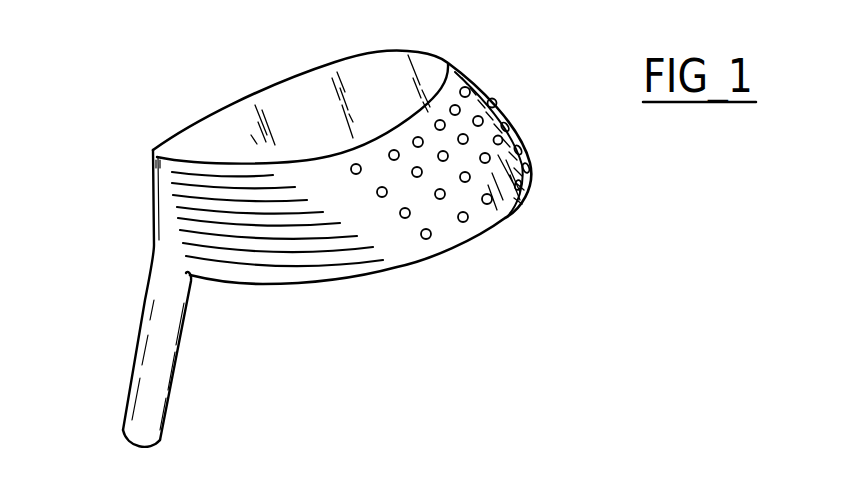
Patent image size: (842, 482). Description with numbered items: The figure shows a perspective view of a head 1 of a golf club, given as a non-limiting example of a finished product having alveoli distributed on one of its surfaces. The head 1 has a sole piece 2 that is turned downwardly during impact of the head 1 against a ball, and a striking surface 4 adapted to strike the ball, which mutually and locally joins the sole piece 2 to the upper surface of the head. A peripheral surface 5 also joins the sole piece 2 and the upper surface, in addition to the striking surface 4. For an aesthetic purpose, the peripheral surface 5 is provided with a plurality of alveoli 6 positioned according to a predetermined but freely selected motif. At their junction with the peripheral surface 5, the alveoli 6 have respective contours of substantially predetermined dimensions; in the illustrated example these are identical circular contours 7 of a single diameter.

The head 1 is at (130, 240).
The sole piece 2 is at (350, 78).
The striking surface 4 is at (287, 248).
The peripheral surface 5 is at (457, 235).
The alveoli 6 is at (490, 203).
The circular contours 7 is at (427, 240).